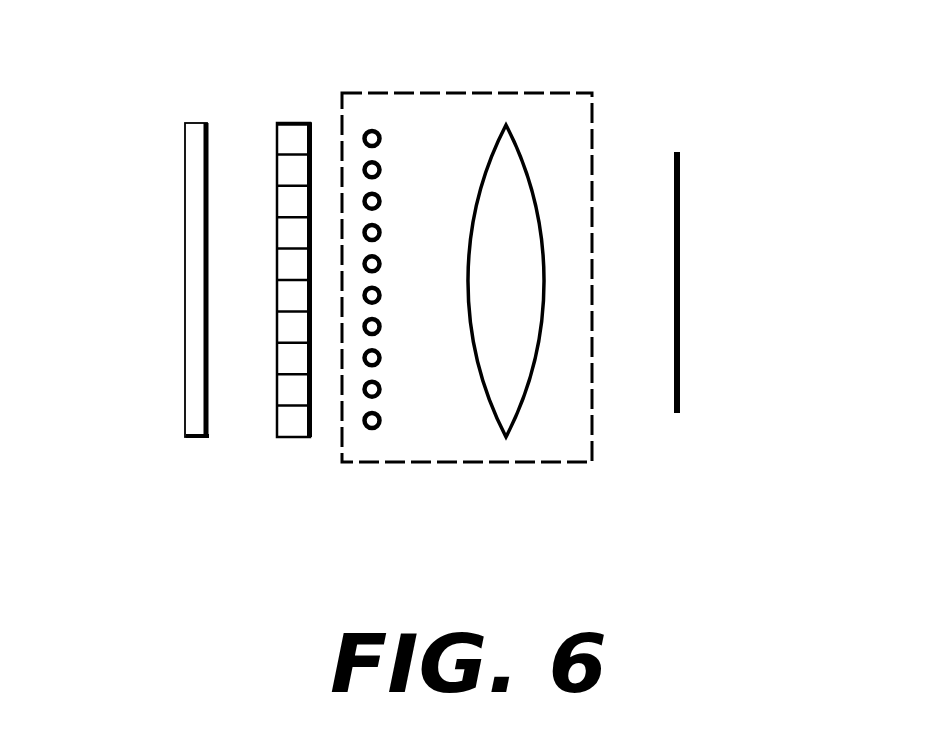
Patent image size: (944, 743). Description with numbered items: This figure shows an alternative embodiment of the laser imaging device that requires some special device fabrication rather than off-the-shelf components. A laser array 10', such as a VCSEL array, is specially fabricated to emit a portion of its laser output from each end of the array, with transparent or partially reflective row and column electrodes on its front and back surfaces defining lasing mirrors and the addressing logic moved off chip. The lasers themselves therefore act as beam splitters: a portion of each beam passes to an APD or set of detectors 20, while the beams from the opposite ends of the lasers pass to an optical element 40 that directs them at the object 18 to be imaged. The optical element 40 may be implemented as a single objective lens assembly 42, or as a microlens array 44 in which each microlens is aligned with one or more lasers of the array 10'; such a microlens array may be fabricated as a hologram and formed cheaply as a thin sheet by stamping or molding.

The detectors 20 is at (186, 397).
The laser array 10' is at (265, 364).
The optical element 40 is at (570, 123).
The microlens array 44 is at (376, 430).
The objective lens assembly 42 is at (507, 123).
The object 18 is at (680, 218).